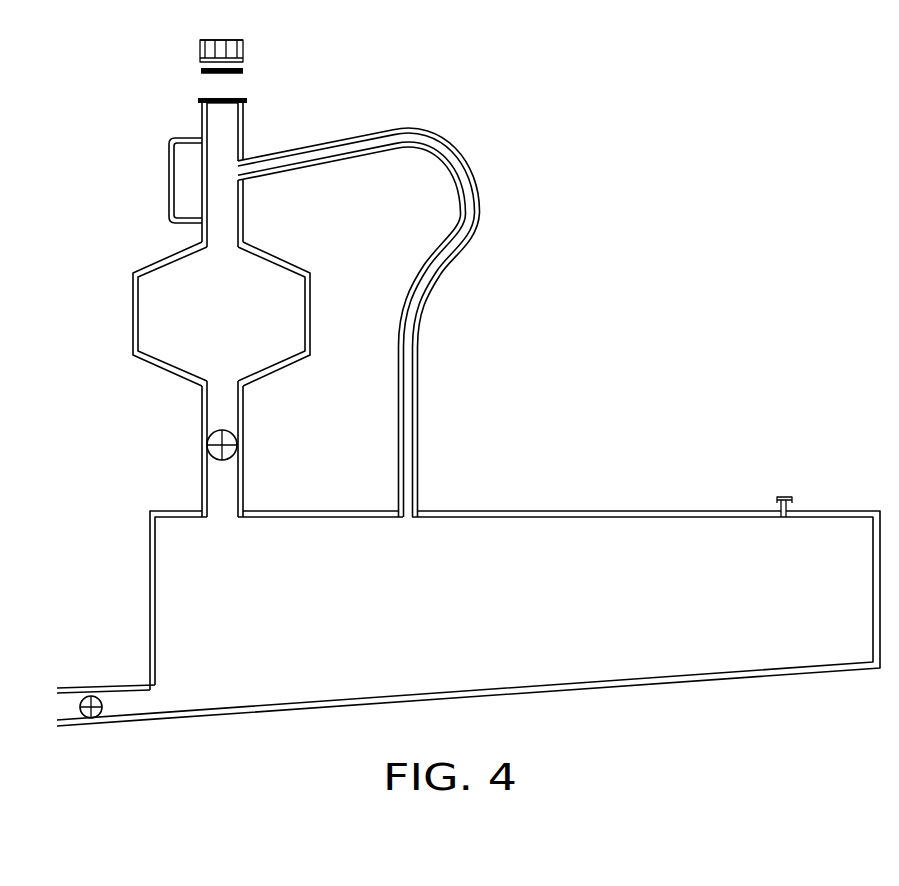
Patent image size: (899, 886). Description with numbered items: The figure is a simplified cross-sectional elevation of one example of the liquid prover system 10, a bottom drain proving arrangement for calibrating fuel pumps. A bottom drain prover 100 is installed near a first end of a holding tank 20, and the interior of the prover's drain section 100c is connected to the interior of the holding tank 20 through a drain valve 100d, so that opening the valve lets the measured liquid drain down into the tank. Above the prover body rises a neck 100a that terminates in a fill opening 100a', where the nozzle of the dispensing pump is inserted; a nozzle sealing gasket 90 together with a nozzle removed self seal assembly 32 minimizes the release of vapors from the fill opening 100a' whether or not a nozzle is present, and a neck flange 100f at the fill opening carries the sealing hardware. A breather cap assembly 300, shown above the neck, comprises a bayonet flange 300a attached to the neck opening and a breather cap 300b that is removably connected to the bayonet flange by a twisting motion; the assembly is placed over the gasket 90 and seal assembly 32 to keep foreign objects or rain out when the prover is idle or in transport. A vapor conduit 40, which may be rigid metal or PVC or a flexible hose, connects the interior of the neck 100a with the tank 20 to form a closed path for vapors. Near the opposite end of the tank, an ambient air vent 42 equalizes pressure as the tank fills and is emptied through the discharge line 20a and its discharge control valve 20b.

The liquid prover system 10 is at (572, 133).
The holding tank 20 is at (485, 611).
The discharge line 20a is at (132, 703).
The discharge control valve 20b is at (104, 716).
The nozzle removed self seal assembly 32 is at (192, 99).
The vapor conduit 40 is at (468, 190).
The ambient air vent 42 is at (790, 486).
The nozzle sealing gasket 90 is at (200, 70).
The bottom drain prover 100 is at (93, 105).
The neck 100a is at (293, 175).
The fill opening 100a' is at (298, 92).
The drain section 100c is at (223, 408).
The drain valve 100d is at (210, 455).
The neck flange 100f is at (201, 105).
The breather cap assembly 300 is at (195, 40).
The bayonet flange 300a is at (243, 70).
The breather cap 300b is at (215, 39).